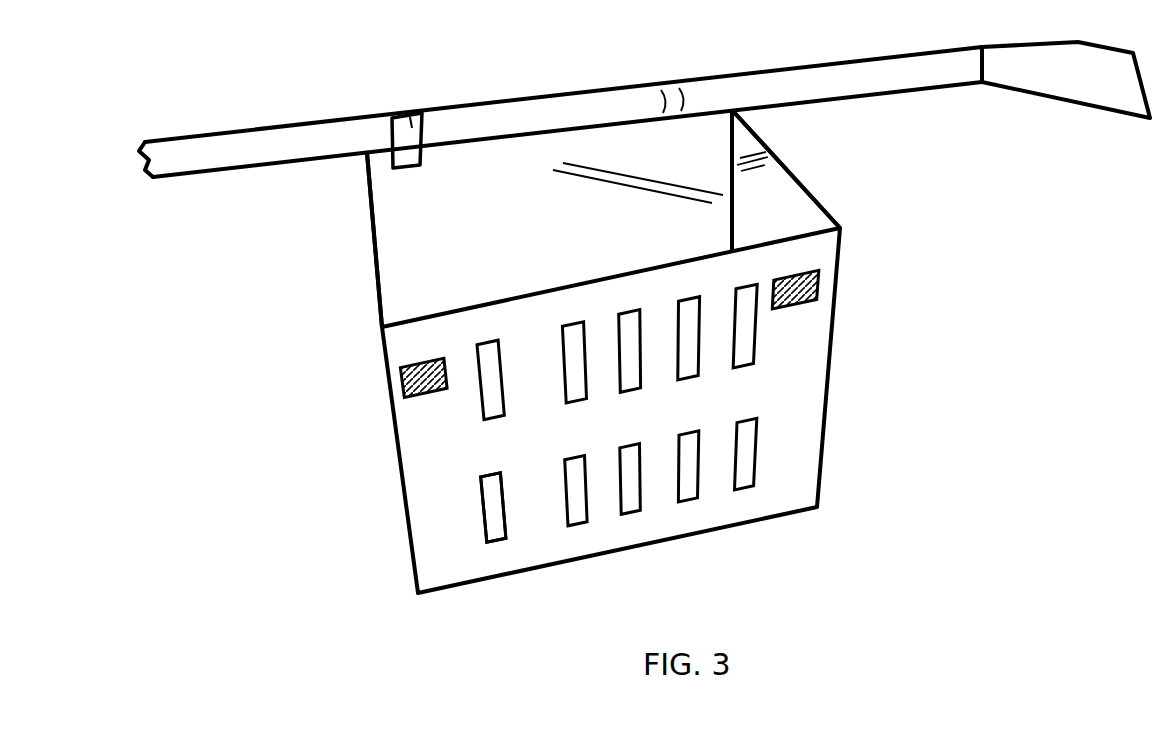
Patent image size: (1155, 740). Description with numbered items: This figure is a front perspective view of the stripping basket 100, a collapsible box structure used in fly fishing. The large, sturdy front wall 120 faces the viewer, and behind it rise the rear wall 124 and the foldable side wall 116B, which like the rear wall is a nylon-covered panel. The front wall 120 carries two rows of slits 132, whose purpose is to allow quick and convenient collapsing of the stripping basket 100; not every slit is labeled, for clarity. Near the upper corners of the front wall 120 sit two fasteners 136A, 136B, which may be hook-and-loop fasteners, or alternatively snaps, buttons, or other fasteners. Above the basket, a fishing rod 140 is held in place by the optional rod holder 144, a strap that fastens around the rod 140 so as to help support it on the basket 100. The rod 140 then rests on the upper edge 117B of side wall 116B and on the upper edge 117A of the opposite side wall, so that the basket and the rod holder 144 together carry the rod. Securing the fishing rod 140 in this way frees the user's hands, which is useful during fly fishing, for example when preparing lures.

The stripping basket 100 is at (246, 281).
The front wall 120 is at (800, 438).
The rear wall 124 is at (400, 245).
The side wall 116B is at (796, 221).
The upper edge of side wall 116A 117A is at (377, 270).
The upper edge of side wall 116B 117B is at (783, 160).
The slits 132 is at (485, 518).
The fastener 136A is at (399, 380).
The fastener 136B is at (825, 283).
The fishing rod 140 is at (558, 108).
The rod holder 144 is at (410, 122).